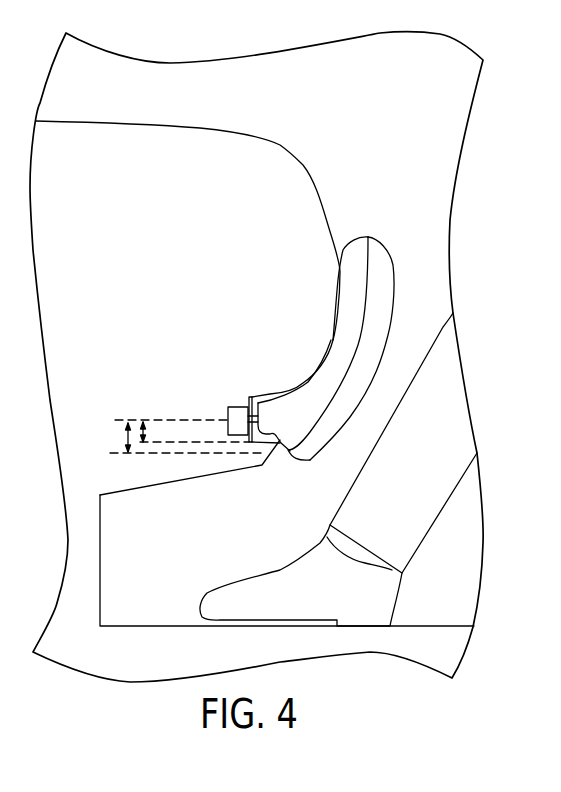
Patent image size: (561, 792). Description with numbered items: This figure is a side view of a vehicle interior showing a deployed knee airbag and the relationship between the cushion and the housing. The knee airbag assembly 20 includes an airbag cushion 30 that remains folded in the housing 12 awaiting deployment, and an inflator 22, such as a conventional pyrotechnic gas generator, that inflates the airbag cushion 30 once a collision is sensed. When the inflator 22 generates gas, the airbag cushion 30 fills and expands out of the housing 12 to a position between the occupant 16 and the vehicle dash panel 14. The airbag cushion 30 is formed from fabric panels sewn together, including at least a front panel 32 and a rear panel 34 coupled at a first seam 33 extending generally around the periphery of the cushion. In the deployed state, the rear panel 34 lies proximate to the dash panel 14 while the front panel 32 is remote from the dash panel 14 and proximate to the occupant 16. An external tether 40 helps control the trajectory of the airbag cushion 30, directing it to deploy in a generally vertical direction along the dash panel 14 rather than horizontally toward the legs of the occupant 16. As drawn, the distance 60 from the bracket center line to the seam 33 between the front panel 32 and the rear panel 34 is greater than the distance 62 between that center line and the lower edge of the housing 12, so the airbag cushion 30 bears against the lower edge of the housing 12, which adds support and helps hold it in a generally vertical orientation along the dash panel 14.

The housing 12 is at (275, 390).
The vehicle dash panel 14 is at (318, 195).
The occupant 16 is at (450, 397).
The knee airbag assembly 20 is at (218, 368).
The inflator 22 is at (227, 410).
The airbag cushion 30 is at (383, 228).
The front panel 32 is at (300, 450).
The first seam 33 is at (368, 283).
The rear panel 34 is at (359, 258).
The external tether 40 is at (256, 396).
The distance 60 is at (127, 433).
The distance 62 is at (145, 430).